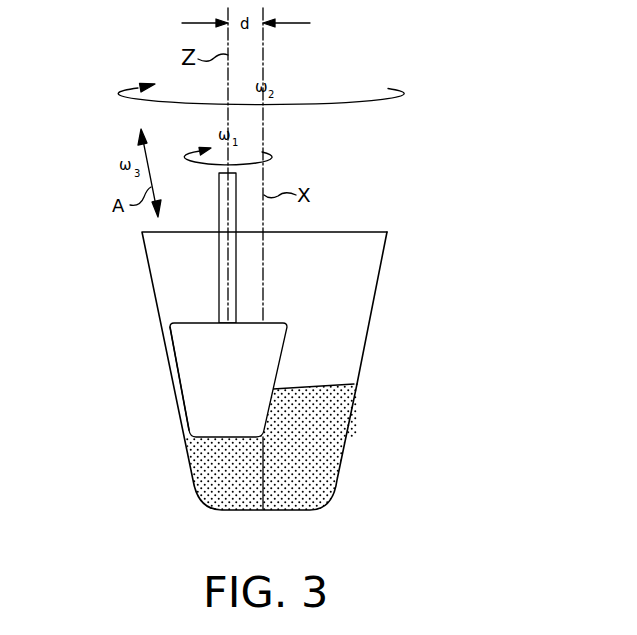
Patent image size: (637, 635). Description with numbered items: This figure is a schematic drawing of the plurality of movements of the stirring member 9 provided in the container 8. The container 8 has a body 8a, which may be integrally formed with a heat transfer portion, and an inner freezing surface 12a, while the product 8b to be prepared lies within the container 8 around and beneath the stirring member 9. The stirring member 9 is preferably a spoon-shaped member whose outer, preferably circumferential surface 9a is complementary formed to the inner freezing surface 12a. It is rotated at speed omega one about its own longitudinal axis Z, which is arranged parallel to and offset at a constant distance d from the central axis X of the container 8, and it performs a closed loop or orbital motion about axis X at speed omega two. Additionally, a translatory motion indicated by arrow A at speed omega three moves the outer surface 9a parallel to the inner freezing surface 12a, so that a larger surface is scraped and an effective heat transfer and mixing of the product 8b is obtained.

The inner freezing surface 12a is at (152, 286).
The body of the container 8a is at (380, 262).
The container 8 is at (287, 511).
The product 8b is at (247, 486).
The stirring member 9 is at (234, 390).
The outer surface 9a is at (174, 356).